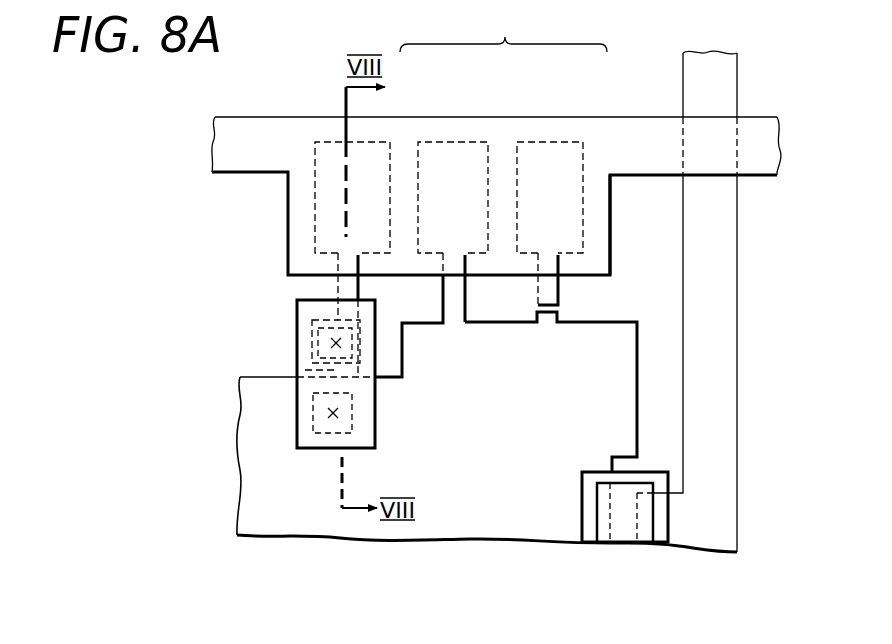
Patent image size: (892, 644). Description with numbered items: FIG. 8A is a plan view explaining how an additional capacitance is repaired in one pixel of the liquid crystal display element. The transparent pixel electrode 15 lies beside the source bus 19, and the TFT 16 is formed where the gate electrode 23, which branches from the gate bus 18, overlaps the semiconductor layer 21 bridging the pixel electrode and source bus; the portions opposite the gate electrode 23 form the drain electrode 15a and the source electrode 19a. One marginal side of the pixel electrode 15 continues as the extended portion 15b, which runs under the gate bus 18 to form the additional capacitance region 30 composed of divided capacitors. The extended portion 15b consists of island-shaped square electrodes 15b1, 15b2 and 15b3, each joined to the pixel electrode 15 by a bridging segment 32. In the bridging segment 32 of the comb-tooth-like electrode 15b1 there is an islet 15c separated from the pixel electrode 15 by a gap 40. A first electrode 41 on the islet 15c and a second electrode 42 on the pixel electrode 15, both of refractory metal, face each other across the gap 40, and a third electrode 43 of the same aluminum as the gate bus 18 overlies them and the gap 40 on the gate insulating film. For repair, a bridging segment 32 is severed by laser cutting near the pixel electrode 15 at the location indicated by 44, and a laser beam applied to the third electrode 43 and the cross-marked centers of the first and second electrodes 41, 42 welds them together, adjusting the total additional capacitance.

The pixel electrode 15 is at (505, 535).
The drain electrode 15a is at (610, 543).
The extended portion 15b is at (496, 141).
The square electrode 15b1 is at (378, 142).
The square electrode 15b2 is at (453, 142).
The square electrode 15b3 is at (546, 142).
The islet 15c is at (312, 332).
The TFT 16 is at (578, 471).
The gate bus 18 is at (703, 133).
The source bus 19 is at (727, 275).
The source electrode 19a is at (640, 543).
The semiconductor layer 21 is at (645, 472).
The gate electrode 23 is at (597, 510).
The additional capacitance region 30 is at (615, 198).
The bridging segment 32 is at (342, 289).
The gap 40 is at (382, 358).
The first electrode 41 is at (318, 342).
The second electrode 42 is at (315, 417).
The third electrode 43 is at (295, 443).
The laser cut 44 is at (562, 310).